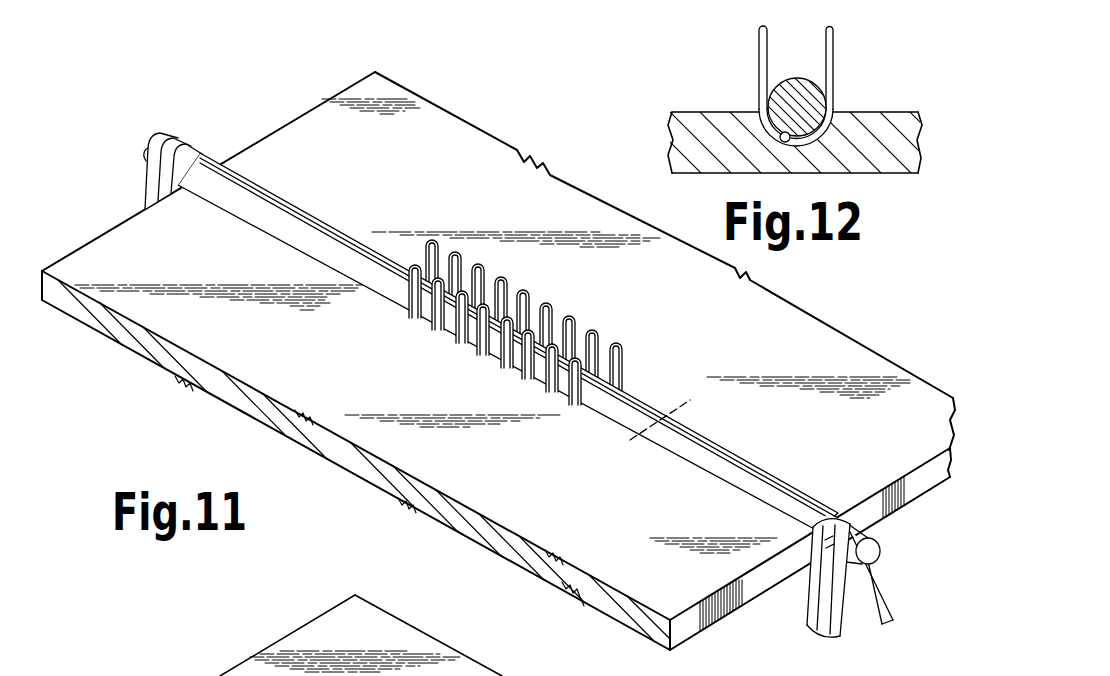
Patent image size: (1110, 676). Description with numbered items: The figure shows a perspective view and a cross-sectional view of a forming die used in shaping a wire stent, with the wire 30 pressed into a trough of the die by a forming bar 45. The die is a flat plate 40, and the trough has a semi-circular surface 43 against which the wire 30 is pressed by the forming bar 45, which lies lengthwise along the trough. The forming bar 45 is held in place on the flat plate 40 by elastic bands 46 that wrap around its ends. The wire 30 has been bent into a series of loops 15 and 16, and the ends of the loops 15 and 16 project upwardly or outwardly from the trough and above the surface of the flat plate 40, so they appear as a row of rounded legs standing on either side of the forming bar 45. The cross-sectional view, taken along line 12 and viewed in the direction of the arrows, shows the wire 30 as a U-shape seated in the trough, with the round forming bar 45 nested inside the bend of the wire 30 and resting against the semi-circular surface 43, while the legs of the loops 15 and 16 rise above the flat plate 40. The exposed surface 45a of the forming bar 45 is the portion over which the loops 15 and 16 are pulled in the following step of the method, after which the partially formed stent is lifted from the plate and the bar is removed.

In FIG. 11, the section line 12- 12 is at (629, 420).
In FIG. 11, the loop 15 is at (428, 313).
In FIG. 12, the loop 15 is at (799, 74).
In FIG. 11, the loop 16 is at (464, 265).
In FIG. 12, the loop 16 is at (842, 39).
In FIG. 12, the wire 30 is at (760, 46).
In FIG. 11, the flat plate 40 is at (641, 532).
In FIG. 12, the flat plate 40 is at (893, 130).
In FIG. 12, the semi-circular surface 43 is at (789, 142).
In FIG. 11, the forming bar 45 is at (755, 477).
In FIG. 12, the forming bar 45 is at (807, 68).
In FIG. 12, the exposed surface 45a is at (785, 77).
In FIG. 11, the elastic bands 46 is at (157, 186).